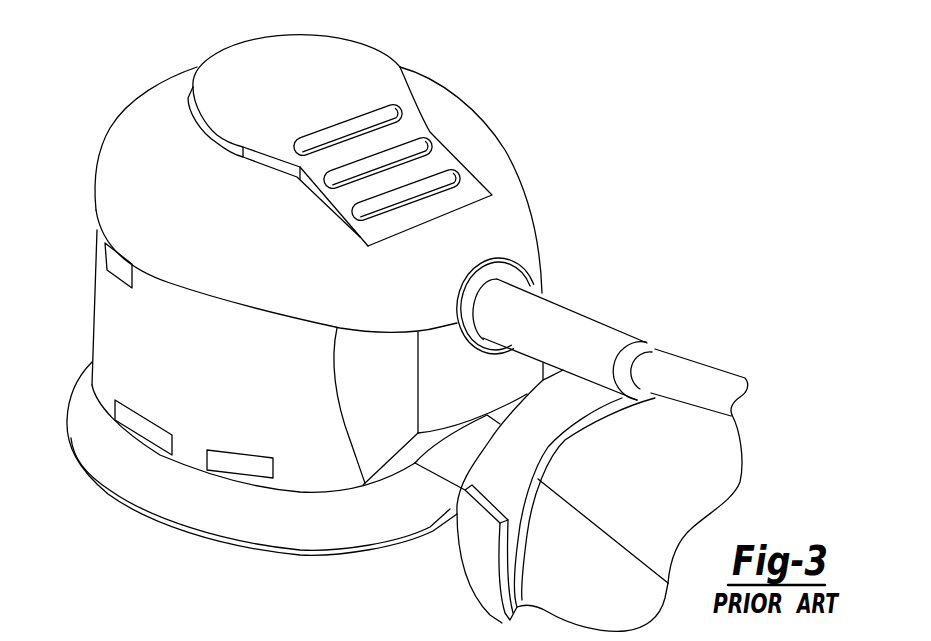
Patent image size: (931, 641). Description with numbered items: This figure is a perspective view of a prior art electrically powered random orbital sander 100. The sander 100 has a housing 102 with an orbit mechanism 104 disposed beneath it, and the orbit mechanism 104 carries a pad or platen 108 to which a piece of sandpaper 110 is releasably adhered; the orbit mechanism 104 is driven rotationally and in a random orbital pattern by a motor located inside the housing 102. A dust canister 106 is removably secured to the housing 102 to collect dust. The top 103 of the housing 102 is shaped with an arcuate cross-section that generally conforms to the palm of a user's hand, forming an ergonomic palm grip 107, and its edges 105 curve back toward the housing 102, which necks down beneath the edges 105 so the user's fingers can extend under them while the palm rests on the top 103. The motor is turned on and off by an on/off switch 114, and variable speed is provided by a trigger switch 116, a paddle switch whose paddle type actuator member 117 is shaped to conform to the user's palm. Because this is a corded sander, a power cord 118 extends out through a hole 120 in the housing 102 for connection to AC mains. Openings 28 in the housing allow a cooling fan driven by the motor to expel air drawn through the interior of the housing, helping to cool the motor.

The sander 100 is at (503, 72).
The housing 102 is at (132, 323).
The top 103 is at (130, 120).
The orbit mechanism 104 is at (112, 470).
The edges 105 is at (128, 212).
The dust canister 106 is at (705, 455).
The palm grip 107 is at (125, 170).
The pad or platen 108 is at (172, 529).
The sandpaper 110 is at (305, 556).
The on/off switch 114 is at (118, 267).
The trigger switch 116 is at (245, 65).
The paddle type actuator member 117 is at (350, 53).
The power cord 118 is at (620, 335).
The hole 120 is at (517, 268).
The openings 28 is at (212, 452).